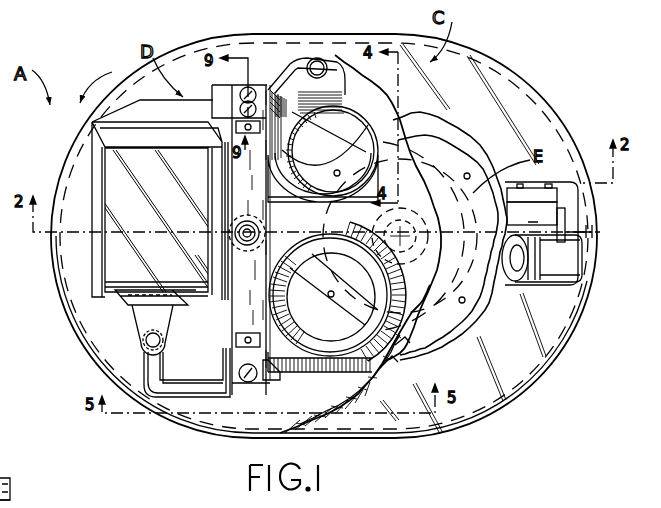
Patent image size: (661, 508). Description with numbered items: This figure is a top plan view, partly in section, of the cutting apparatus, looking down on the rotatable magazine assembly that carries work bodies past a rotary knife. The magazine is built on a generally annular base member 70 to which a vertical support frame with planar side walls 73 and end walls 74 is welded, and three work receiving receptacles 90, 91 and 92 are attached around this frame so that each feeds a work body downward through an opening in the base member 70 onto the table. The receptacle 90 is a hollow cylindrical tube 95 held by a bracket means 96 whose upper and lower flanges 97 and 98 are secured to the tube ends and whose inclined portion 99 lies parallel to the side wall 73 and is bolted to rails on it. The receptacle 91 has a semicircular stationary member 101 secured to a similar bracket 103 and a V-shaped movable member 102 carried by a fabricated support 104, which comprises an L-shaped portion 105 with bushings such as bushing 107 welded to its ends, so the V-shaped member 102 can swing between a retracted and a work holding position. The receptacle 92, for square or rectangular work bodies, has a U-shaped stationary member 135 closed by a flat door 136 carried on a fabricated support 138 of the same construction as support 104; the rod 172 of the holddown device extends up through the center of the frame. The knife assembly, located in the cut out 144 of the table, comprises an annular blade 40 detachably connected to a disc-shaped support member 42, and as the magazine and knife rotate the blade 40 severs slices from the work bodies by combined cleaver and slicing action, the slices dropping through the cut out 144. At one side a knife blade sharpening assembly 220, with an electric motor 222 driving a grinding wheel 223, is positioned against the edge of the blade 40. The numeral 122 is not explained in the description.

The base member 70 is at (233, 43).
The fabricated support 104 is at (277, 57).
The movable member 102 is at (322, 60).
The receptacle 91 is at (348, 107).
The side wall 73 is at (220, 100).
The bracket 103 is at (277, 187).
The end wall 74 is at (248, 385).
The stationary member 135 is at (92, 167).
The rod 172 is at (243, 237).
The receptacle 92 is at (118, 278).
The movable member 136 is at (128, 303).
The fabricated support 138 is at (202, 363).
The blade 40 is at (467, 316).
The support member 42 is at (473, 262).
The stationary member 101 is at (413, 112).
The cut out 144 is at (455, 143).
The receptacle 90 is at (366, 392).
The bracket means 96 is at (313, 428).
The tube 95 is at (315, 378).
The upper flange 97 is at (387, 377).
The lower flange 98 is at (403, 358).
The inclined portion 99 is at (275, 378).
The electric motor 222 is at (580, 283).
The knife blade sharpening assembly 220 is at (558, 257).
The grinding wheel 223 is at (517, 285).
The fitting 122 is at (24, 463).
The bushing 107 is at (14, 500).
The L-shaped portion 105 is at (20, 507).